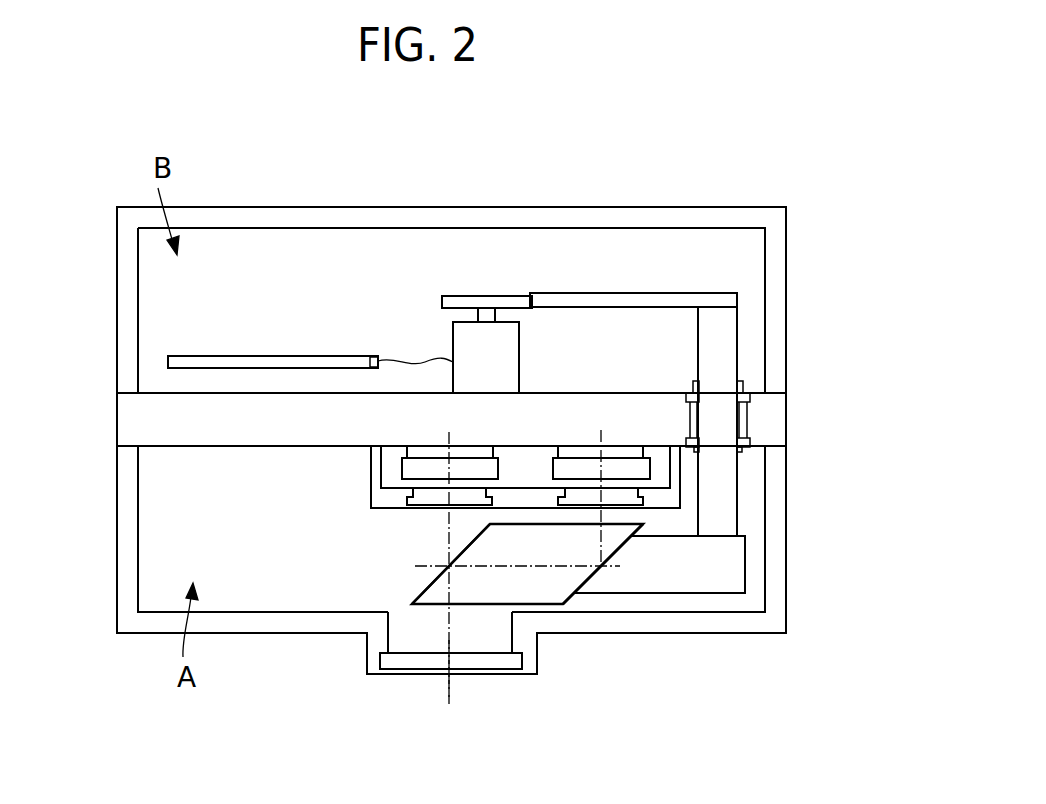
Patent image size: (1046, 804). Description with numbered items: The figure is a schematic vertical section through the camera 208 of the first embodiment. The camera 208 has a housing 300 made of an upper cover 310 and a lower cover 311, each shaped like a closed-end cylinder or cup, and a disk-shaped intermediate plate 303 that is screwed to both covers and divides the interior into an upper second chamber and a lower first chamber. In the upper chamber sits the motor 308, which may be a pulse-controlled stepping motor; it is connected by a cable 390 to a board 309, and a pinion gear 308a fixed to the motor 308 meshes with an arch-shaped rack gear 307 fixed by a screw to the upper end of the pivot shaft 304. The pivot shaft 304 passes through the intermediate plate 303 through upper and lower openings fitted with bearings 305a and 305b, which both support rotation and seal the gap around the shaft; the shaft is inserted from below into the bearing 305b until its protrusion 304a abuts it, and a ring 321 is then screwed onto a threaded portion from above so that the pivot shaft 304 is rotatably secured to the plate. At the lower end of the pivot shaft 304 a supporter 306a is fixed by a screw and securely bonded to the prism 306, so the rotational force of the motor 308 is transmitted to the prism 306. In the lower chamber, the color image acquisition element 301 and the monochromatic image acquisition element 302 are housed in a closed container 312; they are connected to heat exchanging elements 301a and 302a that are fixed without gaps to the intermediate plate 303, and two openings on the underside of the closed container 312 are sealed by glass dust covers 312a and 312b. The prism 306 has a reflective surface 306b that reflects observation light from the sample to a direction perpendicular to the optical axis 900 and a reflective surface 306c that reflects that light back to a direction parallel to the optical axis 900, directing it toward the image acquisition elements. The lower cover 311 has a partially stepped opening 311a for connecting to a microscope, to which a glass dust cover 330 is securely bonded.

The camera 208 is at (637, 163).
The housing 300 is at (455, 390).
The upper cover 310 is at (775, 248).
The lower cover 311 is at (130, 565).
The opening 311a is at (375, 648).
The intermediate plate 303 is at (135, 419).
The board 309 is at (243, 355).
The cable 390 is at (398, 350).
The motor 308 is at (519, 355).
The gear (pinion) 308a is at (498, 297).
The arch-shaped gear (rack) 307 is at (737, 298).
The pivot shaft 304 is at (722, 527).
The protrusion 304a is at (741, 448).
The ring 321 is at (743, 383).
The bearing 305a is at (750, 398).
The bearing 305b is at (750, 438).
The supporter 306a is at (718, 573).
The closed container 312 is at (368, 497).
The glass dust cover 312a is at (417, 503).
The glass dust cover 312b is at (613, 503).
The color image acquisition element 301 is at (397, 465).
The heat exchanging element 301a is at (397, 450).
The monochromatic image acquisition element 302 is at (650, 467).
The heat exchanging element 302a is at (653, 447).
The prism 306 is at (552, 592).
The reflective surface 306b is at (422, 590).
The reflective surface 306c is at (615, 560).
The glass dust cover 330 is at (392, 663).
The optical axis 900 is at (473, 660).